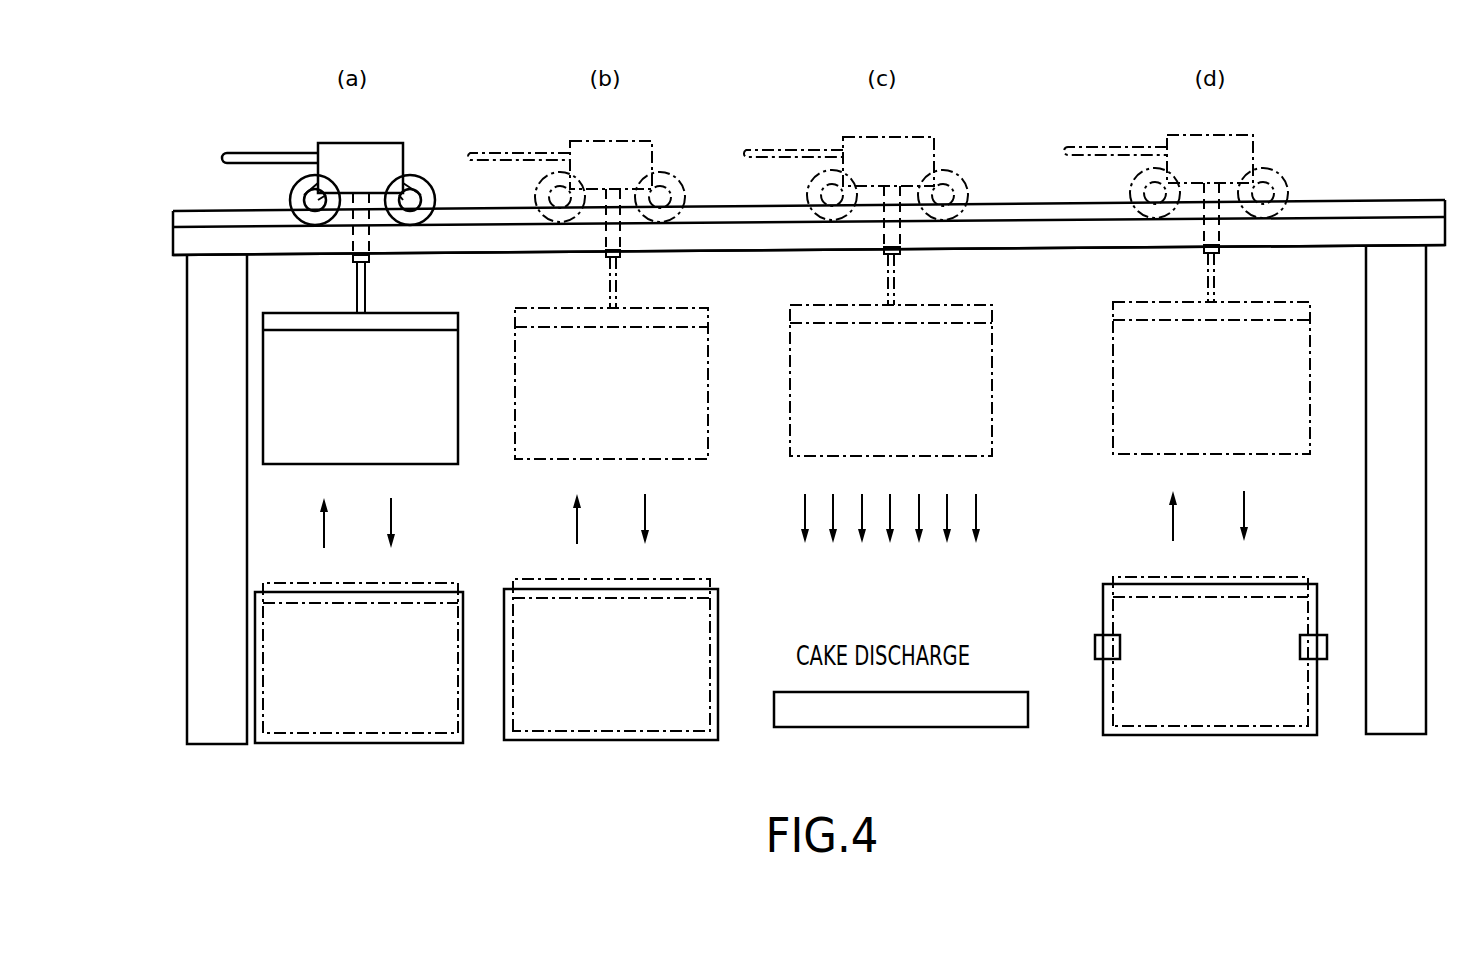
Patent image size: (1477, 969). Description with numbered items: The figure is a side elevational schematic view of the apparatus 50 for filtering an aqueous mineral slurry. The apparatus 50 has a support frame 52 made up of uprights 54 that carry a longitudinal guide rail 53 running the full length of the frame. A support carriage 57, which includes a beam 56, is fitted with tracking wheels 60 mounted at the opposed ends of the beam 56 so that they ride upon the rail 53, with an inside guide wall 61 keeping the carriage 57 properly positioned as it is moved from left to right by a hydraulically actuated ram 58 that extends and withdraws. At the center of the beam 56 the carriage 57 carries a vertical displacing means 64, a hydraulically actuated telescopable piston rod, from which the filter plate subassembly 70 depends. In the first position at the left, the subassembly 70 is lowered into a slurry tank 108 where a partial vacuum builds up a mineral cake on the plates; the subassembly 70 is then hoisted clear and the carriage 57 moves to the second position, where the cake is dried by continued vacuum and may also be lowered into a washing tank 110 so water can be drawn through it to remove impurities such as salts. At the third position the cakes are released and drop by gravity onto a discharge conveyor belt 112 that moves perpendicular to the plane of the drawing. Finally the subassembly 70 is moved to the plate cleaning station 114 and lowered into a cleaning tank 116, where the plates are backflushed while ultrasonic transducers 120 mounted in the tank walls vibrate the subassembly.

The apparatus 50 is at (251, 777).
The support frame 52 is at (182, 380).
The guide rail 53 is at (187, 245).
The uprights 54 is at (200, 530).
The beam 56 is at (365, 153).
The support carriage 57 is at (407, 136).
The hydraulically actuated ram 58 is at (283, 153).
The tracking wheels 60 is at (288, 198).
The inside guide wall 61 is at (212, 222).
The vertical displacing means 64 is at (357, 276).
The filter plate subassembly 70 is at (465, 305).
The slurry tank 108 is at (462, 745).
The washing tank 110 is at (718, 722).
The discharge conveyor belt 112 is at (1005, 690).
The plate cleaning station 114 is at (1095, 740).
The cleaning tank 116 is at (1100, 690).
The transducers 120 is at (1095, 645).